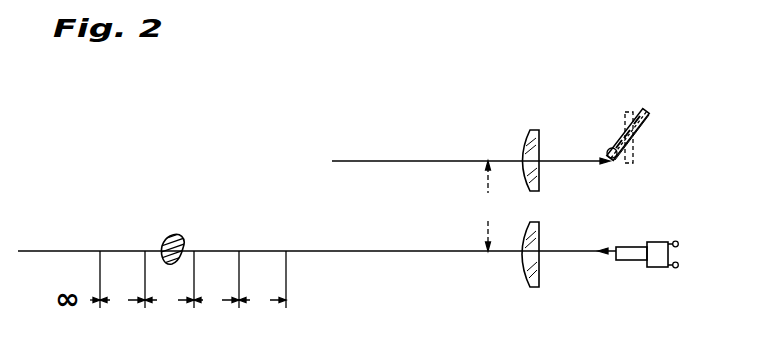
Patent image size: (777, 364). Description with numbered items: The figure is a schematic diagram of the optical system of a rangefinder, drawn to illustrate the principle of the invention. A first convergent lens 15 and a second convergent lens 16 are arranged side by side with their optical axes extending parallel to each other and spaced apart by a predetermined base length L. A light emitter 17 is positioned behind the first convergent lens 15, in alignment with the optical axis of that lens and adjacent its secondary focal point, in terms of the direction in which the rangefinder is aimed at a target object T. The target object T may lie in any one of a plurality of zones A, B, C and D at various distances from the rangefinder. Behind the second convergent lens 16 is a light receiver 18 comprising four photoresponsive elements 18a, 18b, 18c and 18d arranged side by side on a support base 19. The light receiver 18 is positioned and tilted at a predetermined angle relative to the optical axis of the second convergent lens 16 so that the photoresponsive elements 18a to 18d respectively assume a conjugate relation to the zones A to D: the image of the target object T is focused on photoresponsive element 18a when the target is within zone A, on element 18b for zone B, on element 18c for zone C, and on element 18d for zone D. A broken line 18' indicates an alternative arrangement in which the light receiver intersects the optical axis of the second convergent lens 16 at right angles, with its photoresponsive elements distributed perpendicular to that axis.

The first convergent lens 15 is at (523, 267).
The second convergent lens 16 is at (533, 130).
The light emitter 17 is at (629, 262).
The light receiver 18 is at (633, 129).
The photoresponsive element 18a is at (617, 169).
The photoresponsive element 18b is at (617, 143).
The photoresponsive element 18c is at (624, 128).
The photoresponsive element 18d is at (627, 110).
The light receiver position (broken line) 18' is at (642, 171).
The support base 19 is at (638, 128).
The target object T is at (170, 237).
The base length L is at (486, 206).
The zone A is at (262, 285).
The zone B is at (216, 285).
The zone C is at (169, 285).
The zone D is at (122, 285).